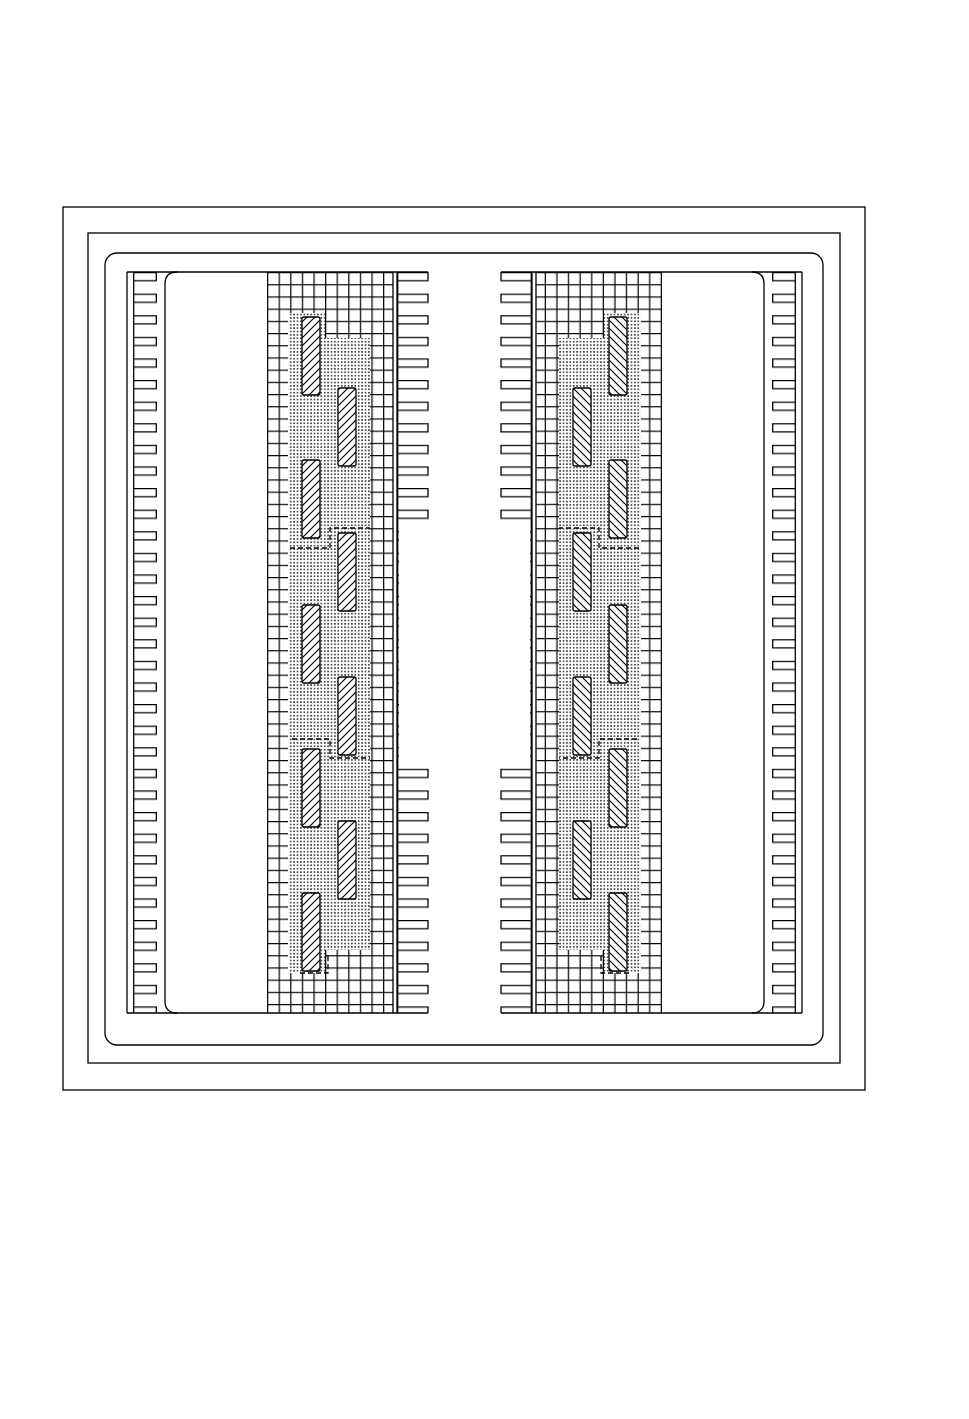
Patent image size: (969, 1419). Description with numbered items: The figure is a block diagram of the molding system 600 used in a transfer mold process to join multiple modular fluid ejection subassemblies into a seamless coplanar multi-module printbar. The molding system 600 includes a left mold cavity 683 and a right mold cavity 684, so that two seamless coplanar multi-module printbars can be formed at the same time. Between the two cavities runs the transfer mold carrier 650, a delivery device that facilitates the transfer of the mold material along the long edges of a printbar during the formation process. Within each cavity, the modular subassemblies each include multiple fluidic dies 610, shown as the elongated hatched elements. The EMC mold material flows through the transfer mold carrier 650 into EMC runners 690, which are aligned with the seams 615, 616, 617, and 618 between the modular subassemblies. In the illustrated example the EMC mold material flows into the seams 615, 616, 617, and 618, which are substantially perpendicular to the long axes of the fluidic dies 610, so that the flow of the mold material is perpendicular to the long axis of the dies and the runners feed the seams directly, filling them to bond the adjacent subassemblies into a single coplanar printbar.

The molding system 600 is at (358, 70).
The fluidic die 610 is at (308, 318).
The transfer mold carrier 650 is at (466, 230).
The left mold cavity 683 is at (228, 304).
The right mold cavity 684 is at (725, 304).
The seam 615 is at (639, 548).
The seam 616 is at (547, 886).
The seam 617 is at (290, 548).
The seam 618 is at (292, 739).
The EMC runner 690 is at (484, 651).